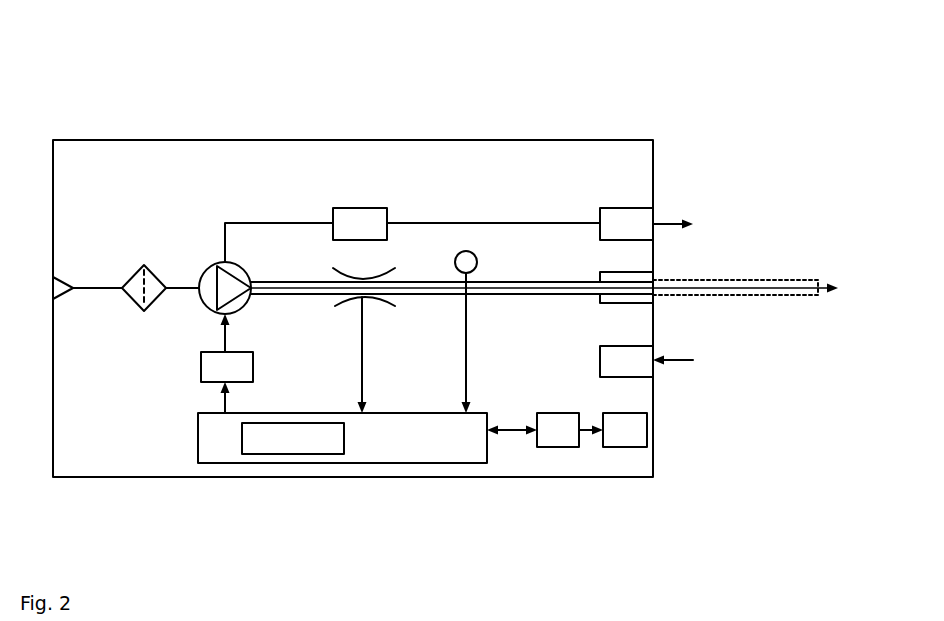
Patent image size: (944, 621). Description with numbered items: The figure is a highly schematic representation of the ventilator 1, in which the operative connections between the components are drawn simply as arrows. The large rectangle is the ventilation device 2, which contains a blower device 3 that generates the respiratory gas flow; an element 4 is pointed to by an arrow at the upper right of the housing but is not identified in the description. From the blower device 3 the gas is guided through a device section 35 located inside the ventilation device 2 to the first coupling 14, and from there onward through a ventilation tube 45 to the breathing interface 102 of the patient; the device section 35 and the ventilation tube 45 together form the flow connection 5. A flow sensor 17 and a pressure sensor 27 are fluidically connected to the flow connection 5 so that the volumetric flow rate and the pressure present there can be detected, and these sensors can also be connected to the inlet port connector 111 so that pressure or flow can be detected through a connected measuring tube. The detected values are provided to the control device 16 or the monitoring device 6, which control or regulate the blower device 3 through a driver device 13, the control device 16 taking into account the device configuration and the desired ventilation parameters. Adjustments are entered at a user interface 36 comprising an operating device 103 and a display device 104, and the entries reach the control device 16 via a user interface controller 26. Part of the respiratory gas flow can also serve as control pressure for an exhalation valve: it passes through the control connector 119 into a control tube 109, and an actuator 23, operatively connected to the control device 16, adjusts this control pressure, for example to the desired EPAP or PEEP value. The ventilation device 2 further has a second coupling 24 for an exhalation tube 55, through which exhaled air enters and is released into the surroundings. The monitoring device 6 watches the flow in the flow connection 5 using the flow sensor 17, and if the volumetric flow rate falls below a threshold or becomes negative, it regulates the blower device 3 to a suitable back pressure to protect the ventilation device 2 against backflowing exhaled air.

The ventilator 1 is at (70, 26).
The ventilation device 2 is at (82, 140).
The blower device 3 is at (207, 267).
The gas delivery unit 4 is at (636, 150).
The flow connection 5 is at (742, 260).
The monitoring device 6 is at (302, 455).
The driver device 13 is at (200, 370).
The first coupling 14 is at (611, 300).
The control device 16 is at (222, 464).
The flow sensor 17 is at (340, 272).
The actuator 23 is at (358, 222).
The second coupling 24 is at (611, 357).
The user interface controller 26 is at (553, 448).
The pressure sensor 27 is at (455, 262).
The device section 35 is at (486, 281).
The user interface 36 is at (627, 448).
The ventilation tube 45 is at (748, 280).
The exhalation tube 55 is at (712, 352).
The breathing interface 102 is at (845, 271).
The operating device 103 is at (627, 423).
The display device 104 is at (625, 438).
The control tube 109 is at (706, 200).
The inlet port connector 111 is at (608, 275).
The control connector 119 is at (608, 216).